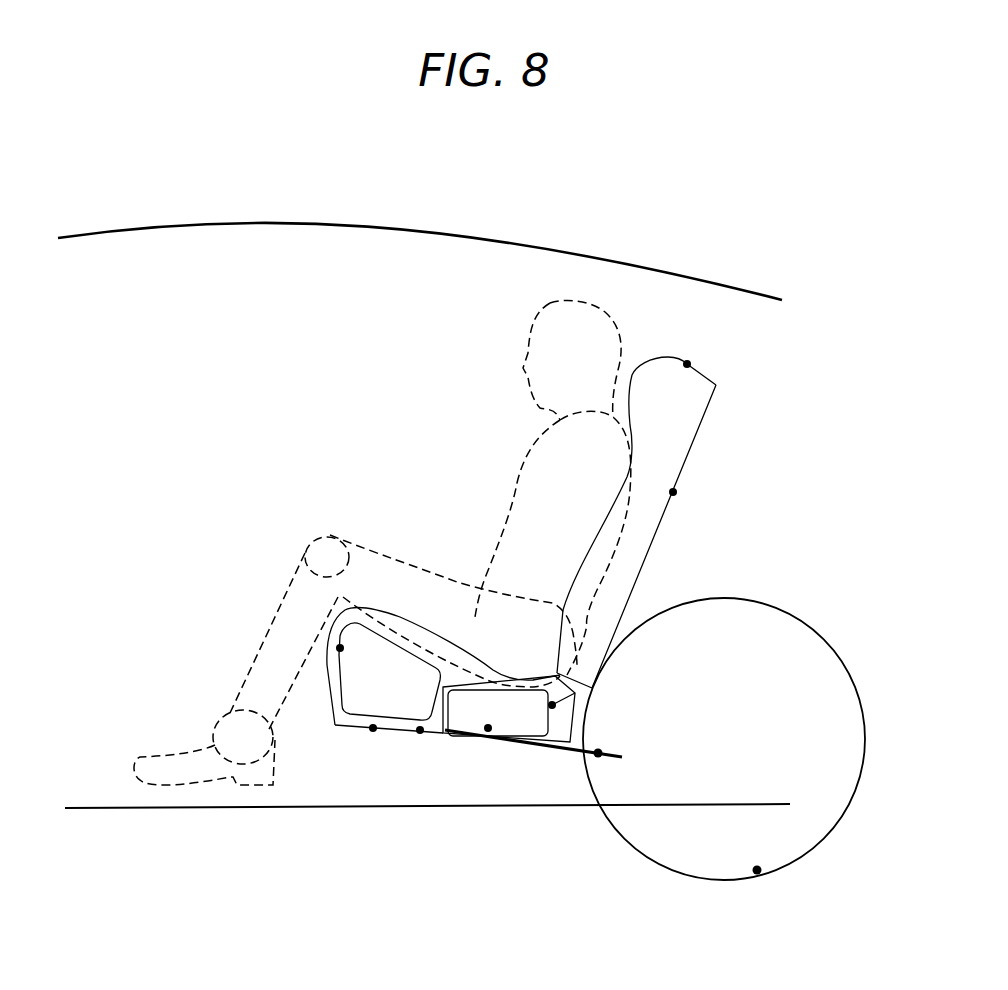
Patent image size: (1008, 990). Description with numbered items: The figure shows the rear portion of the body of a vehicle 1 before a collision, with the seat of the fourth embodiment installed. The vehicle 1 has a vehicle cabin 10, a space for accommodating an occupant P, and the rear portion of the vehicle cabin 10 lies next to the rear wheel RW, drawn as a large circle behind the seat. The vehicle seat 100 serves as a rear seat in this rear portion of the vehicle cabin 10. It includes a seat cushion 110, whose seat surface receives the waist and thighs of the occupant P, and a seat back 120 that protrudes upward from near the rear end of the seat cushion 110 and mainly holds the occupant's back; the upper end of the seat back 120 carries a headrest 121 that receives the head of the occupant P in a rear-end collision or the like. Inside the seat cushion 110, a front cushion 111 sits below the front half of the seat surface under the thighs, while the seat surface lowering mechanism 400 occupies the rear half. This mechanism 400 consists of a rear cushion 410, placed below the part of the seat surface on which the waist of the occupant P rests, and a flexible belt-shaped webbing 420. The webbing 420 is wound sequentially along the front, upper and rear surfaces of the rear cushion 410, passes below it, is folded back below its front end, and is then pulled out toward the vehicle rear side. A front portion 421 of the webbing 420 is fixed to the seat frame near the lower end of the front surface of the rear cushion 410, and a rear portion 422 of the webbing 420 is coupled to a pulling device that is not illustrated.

The vehicle 1 is at (116, 212).
The vehicle cabin 10 is at (289, 368).
The vehicle seat 100 is at (676, 330).
The seat cushion 110 is at (373, 728).
The front cushion 111 is at (340, 648).
The seat back 120 is at (673, 492).
The headrest 121 is at (687, 364).
The seat surface lowering mechanism 400 is at (522, 762).
The rear cushion 410 is at (488, 728).
The webbing 420 is at (552, 705).
The front portion of the webbing 421 is at (420, 730).
The rear portion of the webbing 422 is at (598, 753).
The occupant P is at (559, 280).
The rear wheel RW is at (757, 870).